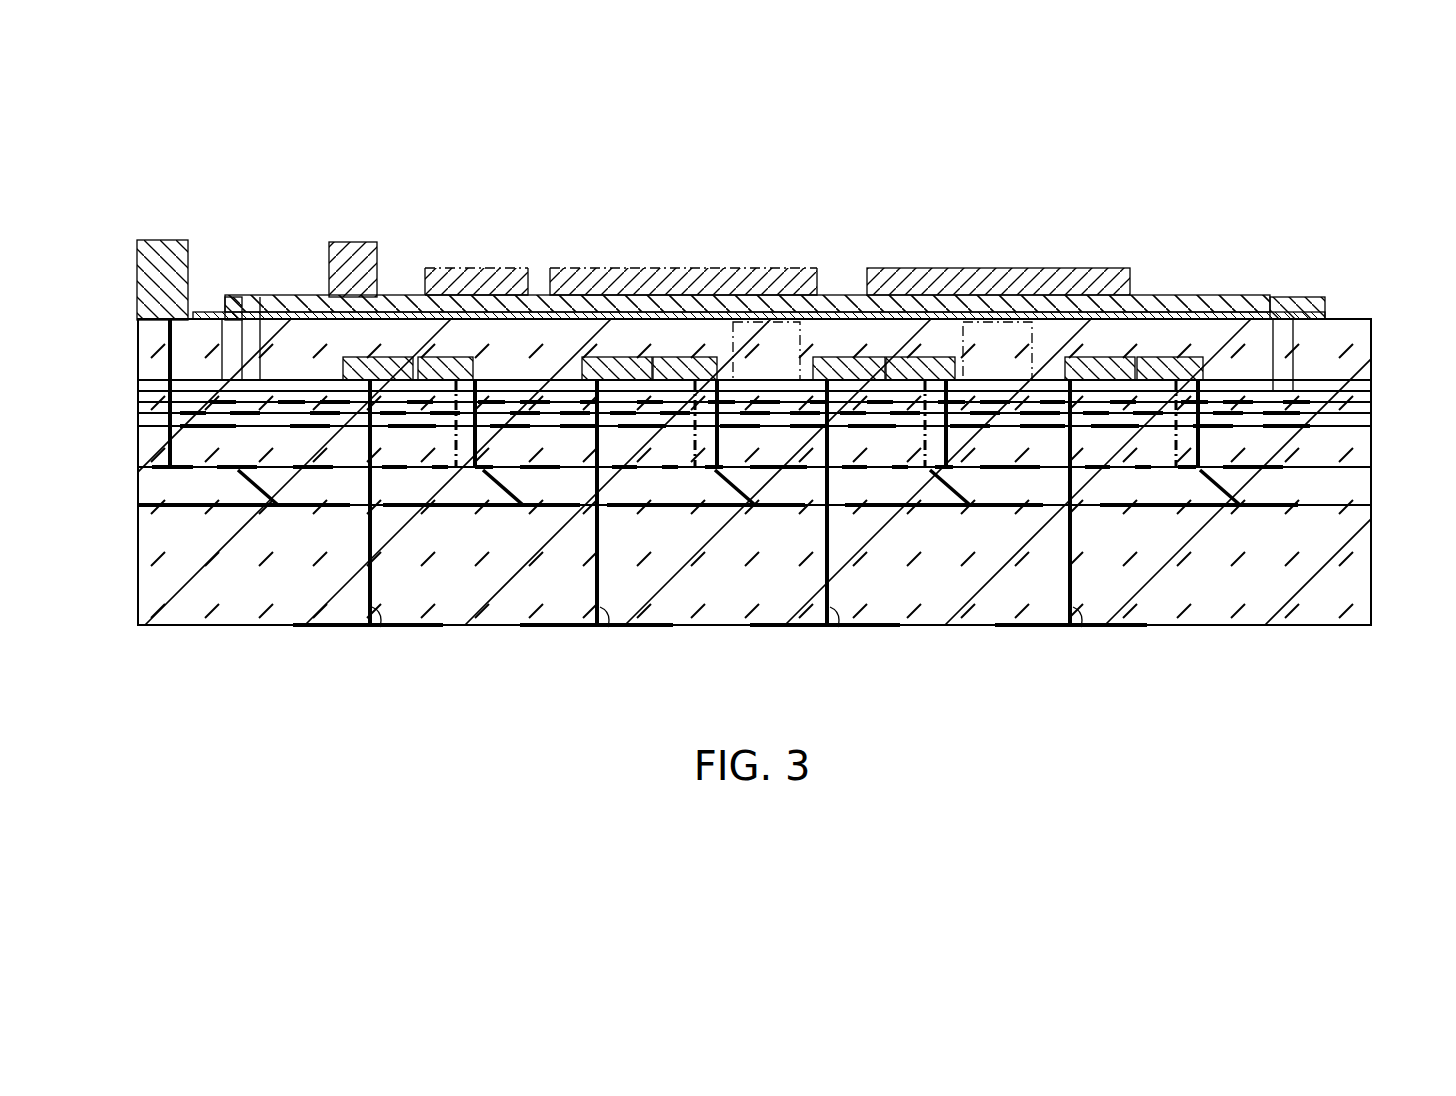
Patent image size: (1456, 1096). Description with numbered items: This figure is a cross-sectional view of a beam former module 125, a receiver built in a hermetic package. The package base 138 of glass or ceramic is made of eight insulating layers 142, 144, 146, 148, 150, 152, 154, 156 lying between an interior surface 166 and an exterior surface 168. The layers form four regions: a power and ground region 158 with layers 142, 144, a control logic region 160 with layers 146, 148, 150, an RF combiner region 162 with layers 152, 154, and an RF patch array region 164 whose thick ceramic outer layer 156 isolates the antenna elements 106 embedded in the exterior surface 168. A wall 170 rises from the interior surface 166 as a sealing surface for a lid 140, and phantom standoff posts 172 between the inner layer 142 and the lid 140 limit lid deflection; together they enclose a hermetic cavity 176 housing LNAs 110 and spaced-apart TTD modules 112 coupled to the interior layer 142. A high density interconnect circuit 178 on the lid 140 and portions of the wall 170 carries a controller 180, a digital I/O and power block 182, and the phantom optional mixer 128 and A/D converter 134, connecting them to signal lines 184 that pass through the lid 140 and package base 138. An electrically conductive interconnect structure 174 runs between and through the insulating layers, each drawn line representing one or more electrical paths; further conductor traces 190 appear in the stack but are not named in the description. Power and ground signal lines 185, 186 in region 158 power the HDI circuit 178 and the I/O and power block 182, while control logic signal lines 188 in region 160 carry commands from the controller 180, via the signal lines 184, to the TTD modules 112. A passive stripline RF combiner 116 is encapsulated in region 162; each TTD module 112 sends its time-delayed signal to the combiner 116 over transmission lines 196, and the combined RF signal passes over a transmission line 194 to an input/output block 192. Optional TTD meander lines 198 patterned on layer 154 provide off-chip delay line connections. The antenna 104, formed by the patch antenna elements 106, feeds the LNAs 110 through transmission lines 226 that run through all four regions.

The antenna 104 is at (485, 690).
The antenna elements 106 is at (380, 630).
The LNAs 110 is at (355, 357).
The TTD modules 112 is at (466, 357).
The stripline RF combiner 116 is at (368, 480).
The beam former module 125 is at (245, 750).
The mixer 128 is at (470, 268).
The A/D converter 134 is at (683, 268).
The package base 138 is at (1340, 630).
The lid 140 is at (357, 313).
The interior insulating layer 142 is at (1372, 321).
The insulating layer 144 is at (1372, 352).
The insulating layer 146 is at (1372, 412).
The insulating layer 148 is at (1372, 386).
The insulating layer 150 is at (1372, 467).
The insulating layer 152 is at (1372, 505).
The insulating layer 154 is at (1373, 510).
The exterior layer 156 is at (1372, 560).
The power and ground region 158 is at (138, 380).
The control logic region 160 is at (138, 380).
The RF combiner region 162 is at (138, 427).
The RF patch array region 164 is at (138, 507).
The interior surface 166 is at (568, 380).
The exterior surface 168 is at (243, 625).
The wall 170 is at (172, 345).
The standoff posts 172 is at (780, 364).
The interconnect structure 174 is at (218, 515).
The hermetic cavity 176 is at (300, 340).
The HDI circuit 178 is at (1170, 296).
The controller 180 is at (998, 268).
The digital I/O and power block 182 is at (358, 242).
The signal lines 184 is at (244, 305).
The power and ground signal lines 185 is at (333, 380).
The power and ground signal lines 186 is at (195, 368).
The control logic signal lines 188 is at (207, 420).
The conductive lines 190 is at (417, 405).
The input/output block 192 is at (165, 240).
The transmission line 194 is at (180, 350).
The transmission lines 196 is at (477, 400).
The TTD meander lines 198 is at (450, 473).
The transmission lines 226 is at (380, 626).